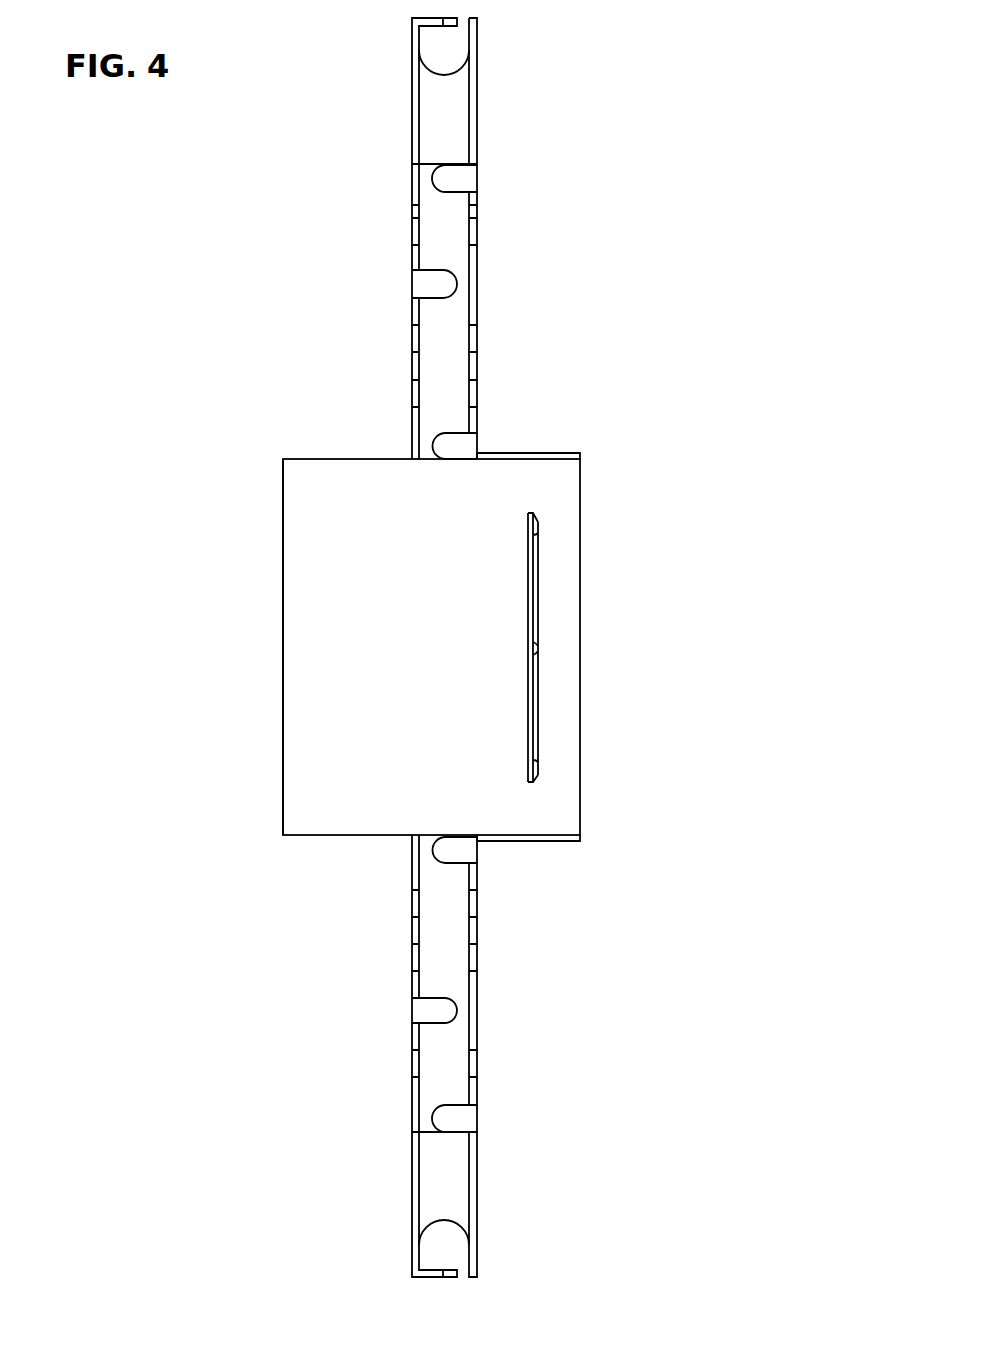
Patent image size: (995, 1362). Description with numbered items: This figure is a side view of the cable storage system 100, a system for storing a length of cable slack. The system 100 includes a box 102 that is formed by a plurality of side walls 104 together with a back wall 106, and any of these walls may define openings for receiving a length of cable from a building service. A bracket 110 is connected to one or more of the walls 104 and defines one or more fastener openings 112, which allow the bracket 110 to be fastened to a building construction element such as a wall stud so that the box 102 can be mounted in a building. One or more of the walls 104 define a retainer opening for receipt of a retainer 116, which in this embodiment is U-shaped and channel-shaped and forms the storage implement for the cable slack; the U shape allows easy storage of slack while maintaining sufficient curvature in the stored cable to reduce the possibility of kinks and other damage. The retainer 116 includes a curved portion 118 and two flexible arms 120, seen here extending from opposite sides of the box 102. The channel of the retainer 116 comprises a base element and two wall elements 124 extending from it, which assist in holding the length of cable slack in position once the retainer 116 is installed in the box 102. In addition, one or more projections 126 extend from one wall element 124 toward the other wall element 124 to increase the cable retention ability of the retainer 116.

The cable storage system 100 is at (690, 143).
The box 102 is at (608, 557).
The side walls 104 is at (316, 457).
The back wall 106 is at (282, 646).
The bracket 110 is at (539, 724).
The fastener openings 112 is at (535, 648).
The retainer 116 is at (503, 240).
The curved portion 118 is at (473, 33).
The flexible arms 120 is at (460, 400).
The wall elements 124 is at (416, 25).
The projections 126 is at (470, 178).